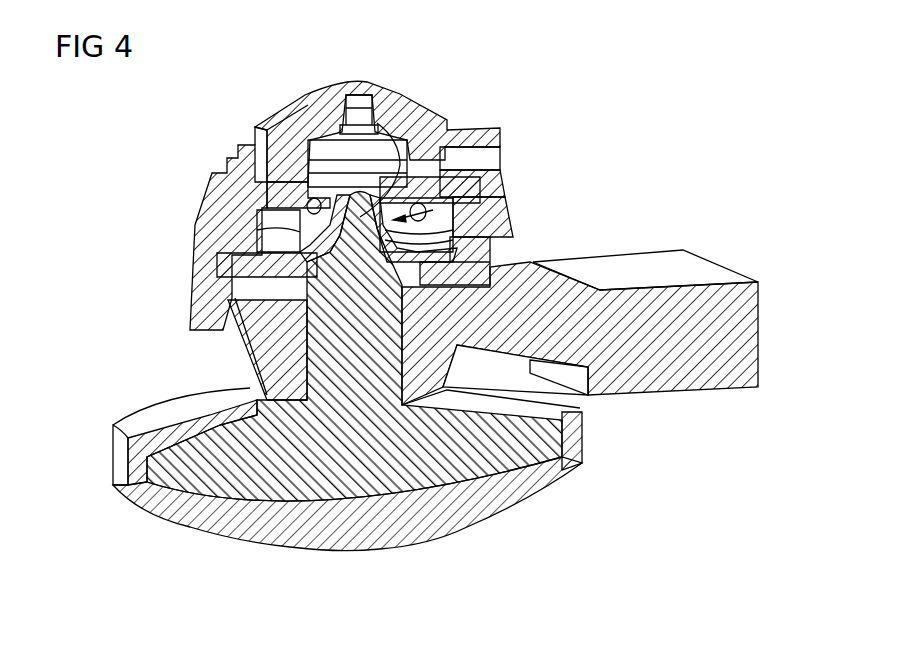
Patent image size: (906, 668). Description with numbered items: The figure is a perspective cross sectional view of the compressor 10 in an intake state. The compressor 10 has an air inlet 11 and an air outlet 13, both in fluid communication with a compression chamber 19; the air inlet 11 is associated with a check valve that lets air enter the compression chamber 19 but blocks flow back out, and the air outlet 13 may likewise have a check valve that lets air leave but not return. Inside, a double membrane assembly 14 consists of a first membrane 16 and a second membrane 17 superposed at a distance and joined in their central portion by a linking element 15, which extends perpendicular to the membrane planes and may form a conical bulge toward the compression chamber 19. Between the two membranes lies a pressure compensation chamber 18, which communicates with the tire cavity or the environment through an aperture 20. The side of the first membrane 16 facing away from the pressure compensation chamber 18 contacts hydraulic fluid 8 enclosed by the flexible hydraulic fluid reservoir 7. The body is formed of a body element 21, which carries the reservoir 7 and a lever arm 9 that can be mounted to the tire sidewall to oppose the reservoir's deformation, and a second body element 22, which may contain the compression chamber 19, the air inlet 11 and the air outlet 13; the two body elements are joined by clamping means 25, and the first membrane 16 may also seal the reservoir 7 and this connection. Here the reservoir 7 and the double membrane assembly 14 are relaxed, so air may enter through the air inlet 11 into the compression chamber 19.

The hydraulic fluid reservoir 7 is at (522, 497).
The hydraulic fluid 8 is at (450, 475).
The lever arm 9 is at (700, 378).
The compressor 10 is at (538, 74).
The air inlet 11 is at (472, 152).
The air outlet 13 is at (357, 108).
The double membrane assembly 14 is at (421, 290).
The linking element 15 is at (364, 160).
The first membrane 16 is at (490, 259).
The second membrane 17 is at (446, 191).
The pressure compensation chamber 18 is at (266, 231).
The compression chamber 19 is at (315, 90).
The aperture 20 is at (426, 211).
The body element 21 is at (100, 462).
The second body element 22 is at (267, 100).
The clamping means 25 is at (194, 302).